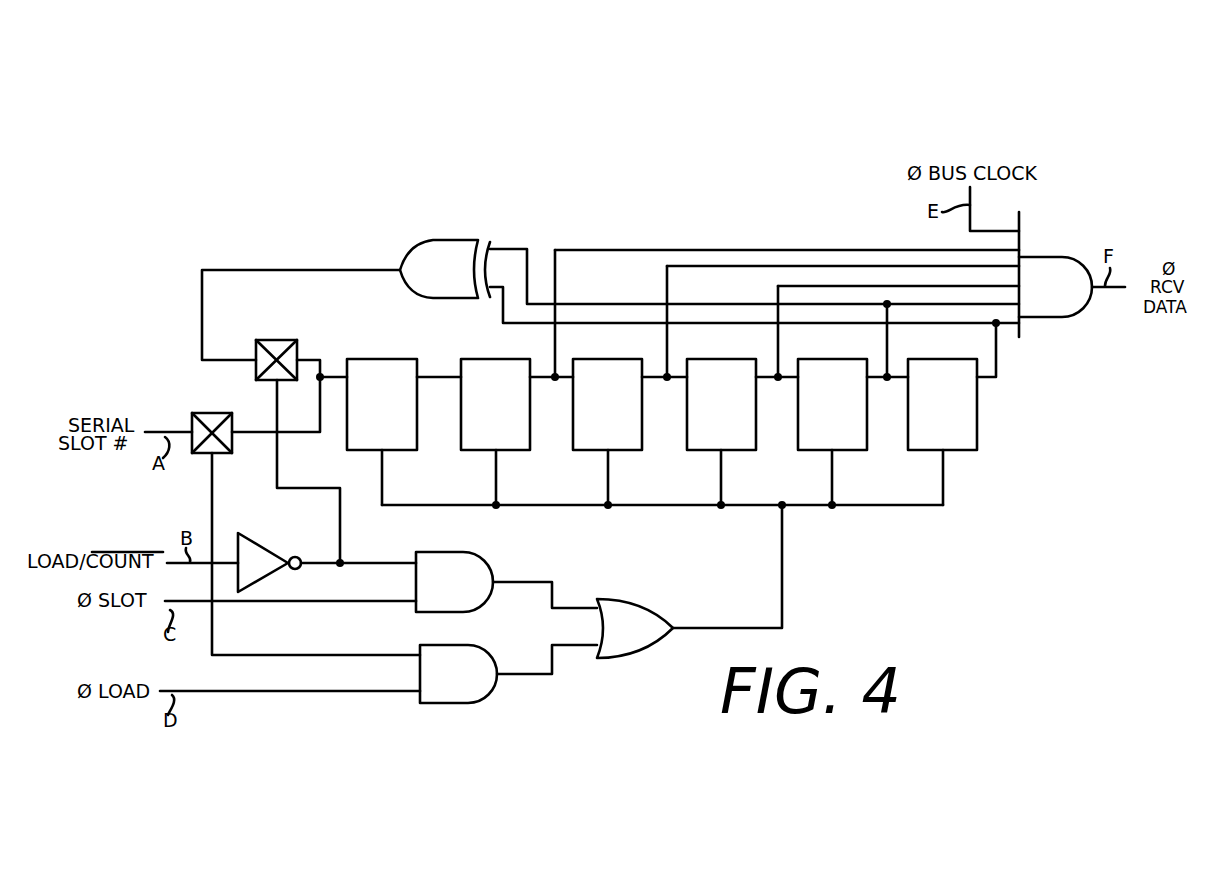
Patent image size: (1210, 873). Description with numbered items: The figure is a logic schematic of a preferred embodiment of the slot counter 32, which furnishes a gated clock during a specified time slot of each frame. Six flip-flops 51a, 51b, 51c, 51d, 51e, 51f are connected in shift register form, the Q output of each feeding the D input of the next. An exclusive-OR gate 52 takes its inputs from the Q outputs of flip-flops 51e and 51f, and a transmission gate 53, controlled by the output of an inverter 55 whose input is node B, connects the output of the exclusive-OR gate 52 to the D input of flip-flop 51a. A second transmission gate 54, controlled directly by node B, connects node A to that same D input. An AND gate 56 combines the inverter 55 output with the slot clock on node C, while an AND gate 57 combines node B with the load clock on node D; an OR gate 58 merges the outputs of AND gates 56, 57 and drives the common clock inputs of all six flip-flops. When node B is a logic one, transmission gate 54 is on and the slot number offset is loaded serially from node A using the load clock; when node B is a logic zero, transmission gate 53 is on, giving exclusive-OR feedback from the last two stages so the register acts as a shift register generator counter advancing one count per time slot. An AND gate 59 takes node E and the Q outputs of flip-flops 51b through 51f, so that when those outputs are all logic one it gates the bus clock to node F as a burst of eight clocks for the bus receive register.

The slot counter 32 is at (858, 545).
The flip-flop 51a is at (411, 451).
The flip-flop 51b is at (524, 451).
The flip-flop 51c is at (636, 451).
The flip-flop 51d is at (750, 451).
The flip-flop 51e is at (861, 451).
The flip-flop 51f is at (971, 451).
The exclusive-OR gate 52 is at (430, 253).
The transmission gate 53 is at (277, 346).
The transmission gate 54 is at (208, 420).
The inverter 55 is at (265, 556).
The AND gate 56 is at (470, 572).
The AND gate 57 is at (465, 658).
The OR gate 58 is at (638, 618).
The AND gate 59 is at (1058, 258).